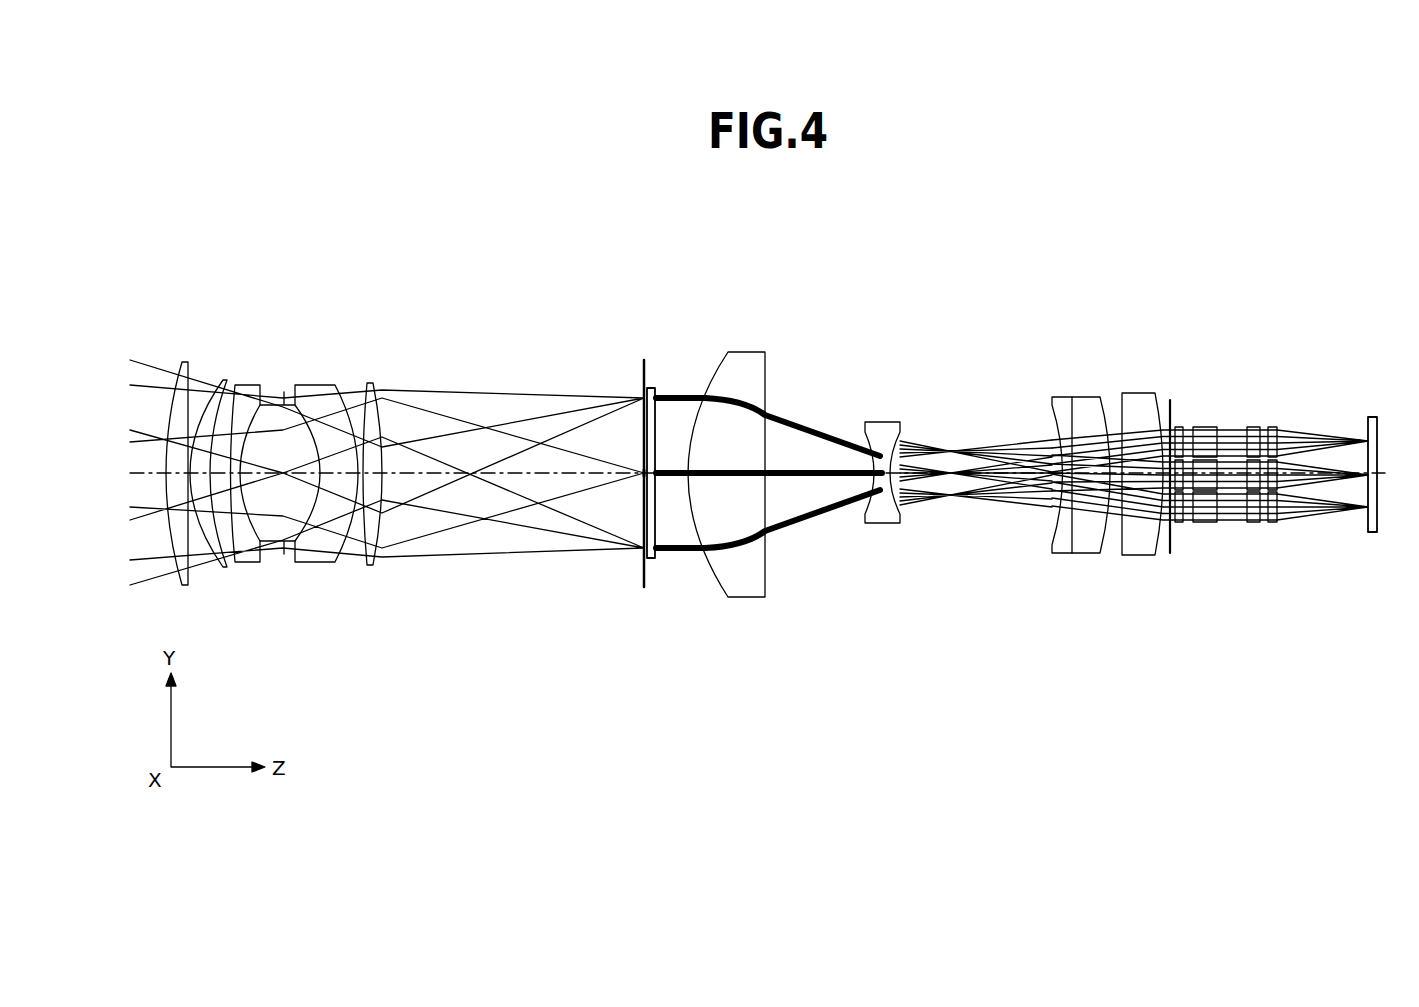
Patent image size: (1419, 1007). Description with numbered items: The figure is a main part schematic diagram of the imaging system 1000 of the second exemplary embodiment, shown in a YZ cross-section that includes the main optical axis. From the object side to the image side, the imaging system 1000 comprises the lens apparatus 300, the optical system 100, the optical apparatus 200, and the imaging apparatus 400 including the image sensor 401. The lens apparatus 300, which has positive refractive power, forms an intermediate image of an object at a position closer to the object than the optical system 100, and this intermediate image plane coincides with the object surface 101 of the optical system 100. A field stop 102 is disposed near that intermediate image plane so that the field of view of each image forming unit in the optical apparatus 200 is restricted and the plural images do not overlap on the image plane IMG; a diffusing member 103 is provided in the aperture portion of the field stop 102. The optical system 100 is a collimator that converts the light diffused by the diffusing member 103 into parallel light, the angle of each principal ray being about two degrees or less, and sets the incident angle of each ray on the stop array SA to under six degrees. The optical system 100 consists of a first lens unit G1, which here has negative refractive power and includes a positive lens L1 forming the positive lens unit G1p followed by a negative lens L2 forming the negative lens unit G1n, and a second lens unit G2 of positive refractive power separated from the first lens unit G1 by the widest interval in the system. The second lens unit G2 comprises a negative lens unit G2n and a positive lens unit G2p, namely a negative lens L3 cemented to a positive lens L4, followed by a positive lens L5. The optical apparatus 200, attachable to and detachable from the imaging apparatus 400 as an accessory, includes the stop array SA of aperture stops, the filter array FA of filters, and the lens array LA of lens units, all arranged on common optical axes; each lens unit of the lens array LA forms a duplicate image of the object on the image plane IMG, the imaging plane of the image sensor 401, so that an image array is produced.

The imaging system 1000 is at (798, 224).
The lens apparatus 300 is at (393, 352).
The optical system 100 is at (911, 546).
The object surface 101 is at (642, 478).
The field stop 102 is at (641, 368).
The diffusing member 103 is at (652, 560).
The optical apparatus 200 is at (1217, 396).
The stop array SA is at (1170, 400).
The filter array FA is at (1180, 425).
The lens array LA is at (1192, 418).
The imaging apparatus 400 is at (1370, 465).
The image sensor 401 is at (1370, 477).
The image plane IMG is at (1372, 532).
The positive lens L1 is at (748, 600).
The negative lens L2 is at (882, 523).
The negative lens L3 is at (1063, 553).
The positive lens L4 is at (1085, 553).
The positive lens L5 is at (1142, 548).
The first lens unit G1 is at (793, 565).
The positive lens unit G1p is at (726, 541).
The negative lens unit G1n is at (842, 576).
The second lens unit G2 is at (1043, 593).
The negative lens unit G2n is at (1005, 572).
The positive lens unit G2p is at (1102, 570).